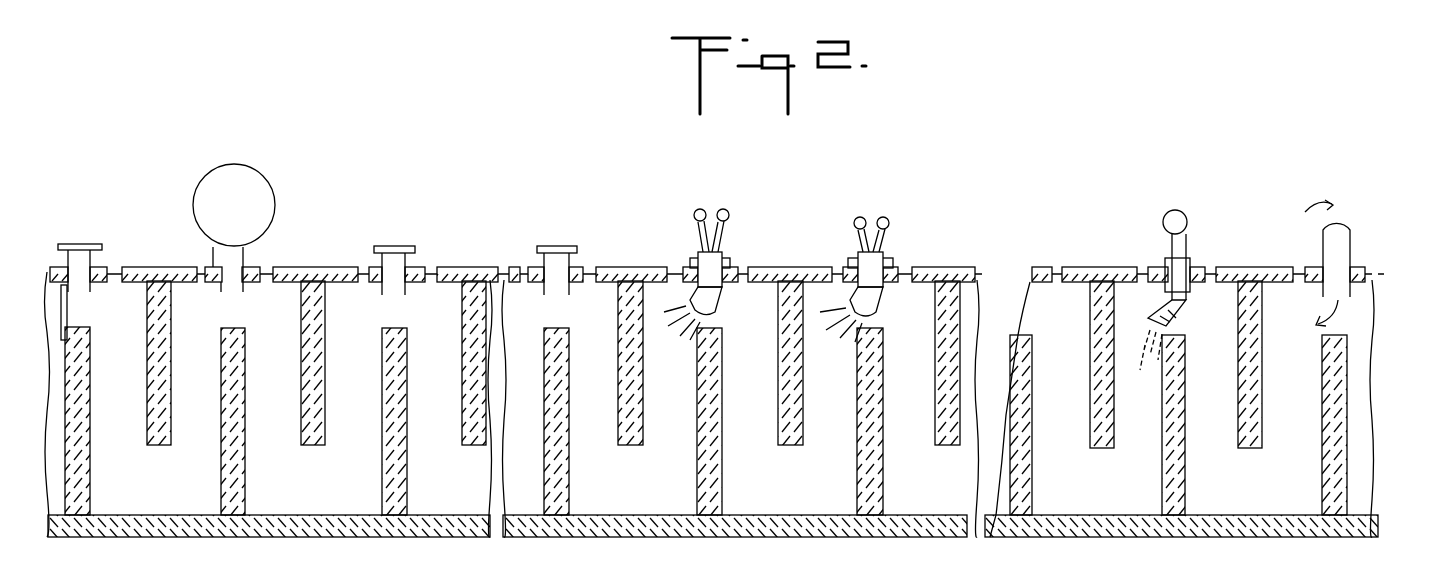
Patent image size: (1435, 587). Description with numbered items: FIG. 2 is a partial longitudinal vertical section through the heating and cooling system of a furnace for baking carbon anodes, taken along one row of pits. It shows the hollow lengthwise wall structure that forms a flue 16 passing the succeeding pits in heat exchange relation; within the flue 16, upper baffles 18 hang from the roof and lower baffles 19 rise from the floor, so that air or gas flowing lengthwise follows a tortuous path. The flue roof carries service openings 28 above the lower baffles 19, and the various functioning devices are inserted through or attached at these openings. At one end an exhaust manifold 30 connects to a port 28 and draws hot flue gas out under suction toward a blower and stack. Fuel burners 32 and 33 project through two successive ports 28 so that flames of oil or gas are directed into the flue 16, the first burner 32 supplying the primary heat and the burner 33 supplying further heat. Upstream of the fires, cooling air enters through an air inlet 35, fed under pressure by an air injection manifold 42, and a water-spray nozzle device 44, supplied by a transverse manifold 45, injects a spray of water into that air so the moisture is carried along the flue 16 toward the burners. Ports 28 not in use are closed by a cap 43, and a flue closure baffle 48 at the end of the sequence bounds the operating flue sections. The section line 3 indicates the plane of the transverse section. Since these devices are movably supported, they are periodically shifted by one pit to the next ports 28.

The section line 3- 3 is at (125, 293).
The flue 16 is at (313, 502).
The upper baffles 18 is at (318, 300).
The lower baffles 19 is at (222, 495).
The service openings 28 is at (230, 275).
The exhaust manifold 30 is at (250, 190).
The fuel burner 32 is at (705, 298).
The fuel burner 33 is at (870, 306).
The air inlet 35 is at (1345, 255).
The air injection manifold 42 is at (1309, 263).
The cap 43 is at (73, 244).
The water-spray nozzle device 44 is at (1172, 302).
The transverse manifold 45 is at (1163, 220).
The flue closure baffles 48 is at (70, 310).